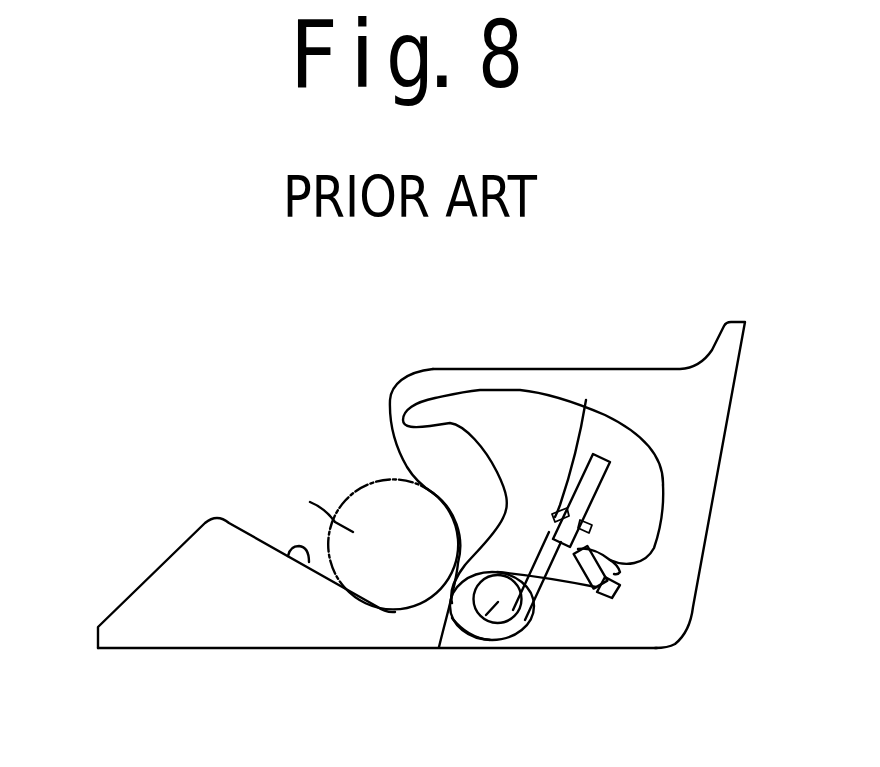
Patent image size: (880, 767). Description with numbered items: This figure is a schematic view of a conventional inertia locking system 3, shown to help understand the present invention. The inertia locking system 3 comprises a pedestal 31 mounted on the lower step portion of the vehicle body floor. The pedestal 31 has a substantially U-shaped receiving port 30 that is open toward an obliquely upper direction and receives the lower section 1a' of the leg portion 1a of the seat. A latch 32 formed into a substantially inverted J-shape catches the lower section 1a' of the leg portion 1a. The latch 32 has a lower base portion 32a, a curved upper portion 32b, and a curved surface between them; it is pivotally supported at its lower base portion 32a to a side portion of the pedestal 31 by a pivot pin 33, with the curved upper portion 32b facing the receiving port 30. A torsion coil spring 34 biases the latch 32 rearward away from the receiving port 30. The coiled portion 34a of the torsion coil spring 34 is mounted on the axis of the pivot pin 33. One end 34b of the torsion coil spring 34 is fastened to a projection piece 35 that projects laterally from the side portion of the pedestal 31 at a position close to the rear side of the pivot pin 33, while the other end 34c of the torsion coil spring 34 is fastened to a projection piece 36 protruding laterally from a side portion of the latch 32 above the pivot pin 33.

The inertia locking system 3 is at (634, 363).
The leg portion 1a is at (382, 509).
The lower section of the leg portion 1a' is at (276, 483).
The receiving port 30 is at (307, 566).
The pedestal 31 is at (164, 546).
The latch 32 is at (563, 398).
The lower base portion 32a is at (537, 613).
The curved upper portion 32b is at (435, 403).
The pivot pin 33 is at (475, 633).
The torsion coil spring 34 is at (501, 633).
The coiled portion 34a is at (466, 604).
The one end of the torsion coil spring 34b is at (620, 572).
The other end of the torsion coil spring 34c is at (586, 402).
The projection piece 35 is at (613, 598).
The projection piece 36 is at (602, 480).